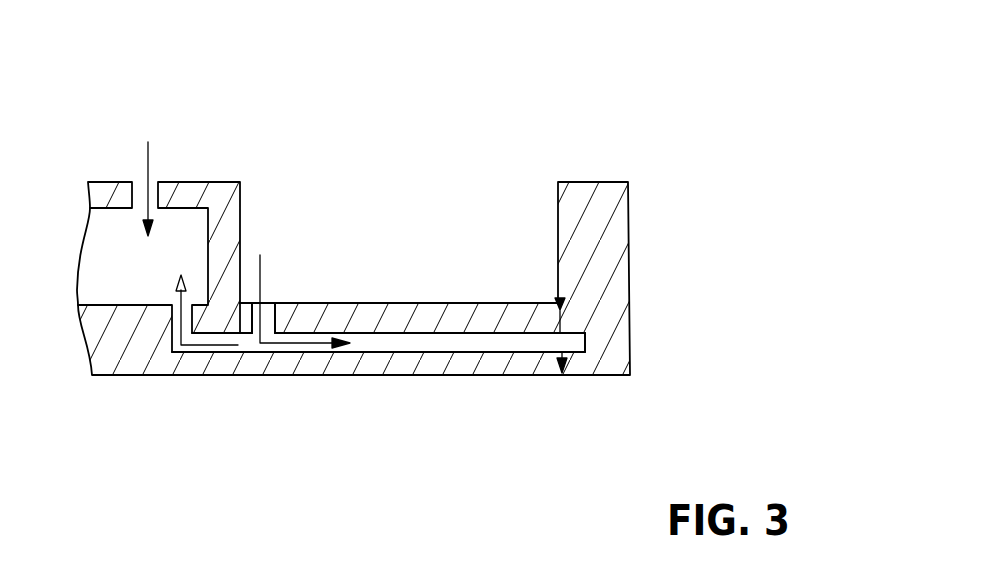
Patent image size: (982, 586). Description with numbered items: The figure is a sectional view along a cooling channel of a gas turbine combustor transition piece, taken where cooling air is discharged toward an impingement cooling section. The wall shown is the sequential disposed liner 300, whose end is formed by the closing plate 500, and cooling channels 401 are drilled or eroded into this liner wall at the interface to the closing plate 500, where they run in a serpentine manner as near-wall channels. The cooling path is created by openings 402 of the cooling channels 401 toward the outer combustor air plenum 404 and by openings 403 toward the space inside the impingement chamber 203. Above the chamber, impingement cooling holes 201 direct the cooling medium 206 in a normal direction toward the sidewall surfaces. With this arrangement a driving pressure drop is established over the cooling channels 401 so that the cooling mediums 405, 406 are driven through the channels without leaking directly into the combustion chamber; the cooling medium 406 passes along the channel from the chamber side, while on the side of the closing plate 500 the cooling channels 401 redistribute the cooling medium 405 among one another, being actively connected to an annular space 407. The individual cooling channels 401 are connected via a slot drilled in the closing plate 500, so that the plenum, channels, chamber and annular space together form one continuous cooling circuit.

The sequential disposed liner 300 is at (390, 140).
The impingement cooling holes 201 is at (135, 185).
The impingement chamber 203 is at (148, 275).
The cooling medium 206 is at (147, 163).
The cooling channels 401 is at (388, 338).
The openings 402 is at (272, 302).
The openings 403 is at (174, 325).
The outer combustor air plenum 404 is at (527, 237).
The cooling medium 405 is at (279, 328).
The cooling medium 406 is at (216, 338).
The annular space 407 is at (575, 340).
The closing plate 500 is at (606, 227).